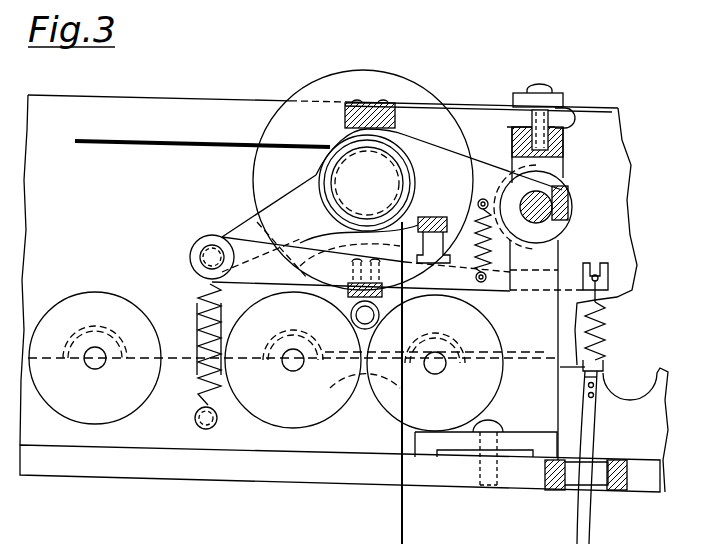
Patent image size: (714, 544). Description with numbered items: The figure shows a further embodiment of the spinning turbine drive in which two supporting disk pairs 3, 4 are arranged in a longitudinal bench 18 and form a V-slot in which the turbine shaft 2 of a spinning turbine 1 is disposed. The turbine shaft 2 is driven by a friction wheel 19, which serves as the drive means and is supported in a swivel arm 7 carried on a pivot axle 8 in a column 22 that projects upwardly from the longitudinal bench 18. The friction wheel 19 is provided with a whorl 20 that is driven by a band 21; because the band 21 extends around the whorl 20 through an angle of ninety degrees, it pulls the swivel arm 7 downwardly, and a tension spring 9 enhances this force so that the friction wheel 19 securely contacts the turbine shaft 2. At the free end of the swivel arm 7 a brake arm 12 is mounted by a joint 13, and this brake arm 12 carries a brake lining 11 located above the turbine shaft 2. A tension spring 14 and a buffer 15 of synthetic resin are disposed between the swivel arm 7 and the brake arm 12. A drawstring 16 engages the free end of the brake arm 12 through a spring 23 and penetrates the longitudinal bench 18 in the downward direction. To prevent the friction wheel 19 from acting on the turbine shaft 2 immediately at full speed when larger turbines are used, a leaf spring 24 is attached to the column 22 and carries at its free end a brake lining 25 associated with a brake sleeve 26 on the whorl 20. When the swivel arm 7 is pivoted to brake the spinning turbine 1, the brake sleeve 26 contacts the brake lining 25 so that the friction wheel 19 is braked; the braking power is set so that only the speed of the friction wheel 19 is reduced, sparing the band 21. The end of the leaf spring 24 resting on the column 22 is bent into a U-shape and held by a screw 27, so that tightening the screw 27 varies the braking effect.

The spinning turbine 1 is at (364, 389).
The turbine shaft 2 is at (362, 318).
The supporting disk pair 3 is at (305, 413).
The supporting disk pair 4 is at (450, 411).
The swivel arm 7 is at (245, 213).
The pivot axle 8 is at (560, 190).
The tension spring 9 is at (194, 400).
The brake lining 11 is at (357, 287).
The brake arm 12 is at (565, 278).
The joint 13 is at (205, 247).
The tension spring 14 is at (493, 252).
The buffer 15 is at (432, 216).
The drawstring 16 is at (586, 510).
The longitudinal bench 18 is at (228, 466).
The friction wheel 19 is at (329, 75).
The whorl 20 is at (340, 167).
The band 21 is at (141, 145).
The column 22 is at (532, 444).
The spring 23 is at (603, 318).
The leaf spring 24 is at (486, 107).
The brake lining 25 is at (374, 104).
The brake sleeve 26 is at (410, 163).
The screw 27 is at (542, 96).